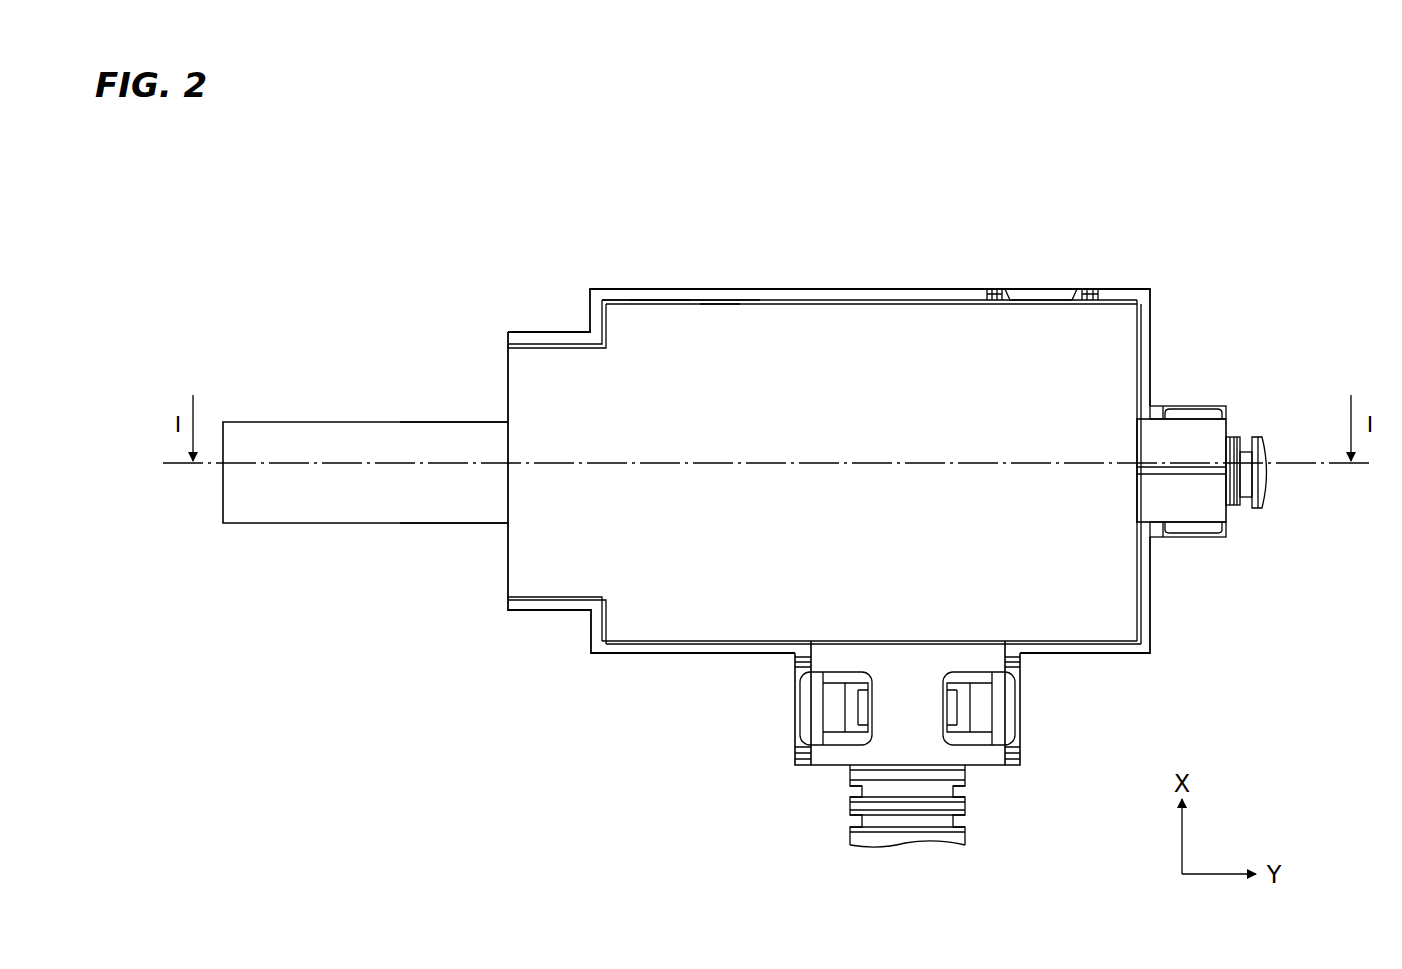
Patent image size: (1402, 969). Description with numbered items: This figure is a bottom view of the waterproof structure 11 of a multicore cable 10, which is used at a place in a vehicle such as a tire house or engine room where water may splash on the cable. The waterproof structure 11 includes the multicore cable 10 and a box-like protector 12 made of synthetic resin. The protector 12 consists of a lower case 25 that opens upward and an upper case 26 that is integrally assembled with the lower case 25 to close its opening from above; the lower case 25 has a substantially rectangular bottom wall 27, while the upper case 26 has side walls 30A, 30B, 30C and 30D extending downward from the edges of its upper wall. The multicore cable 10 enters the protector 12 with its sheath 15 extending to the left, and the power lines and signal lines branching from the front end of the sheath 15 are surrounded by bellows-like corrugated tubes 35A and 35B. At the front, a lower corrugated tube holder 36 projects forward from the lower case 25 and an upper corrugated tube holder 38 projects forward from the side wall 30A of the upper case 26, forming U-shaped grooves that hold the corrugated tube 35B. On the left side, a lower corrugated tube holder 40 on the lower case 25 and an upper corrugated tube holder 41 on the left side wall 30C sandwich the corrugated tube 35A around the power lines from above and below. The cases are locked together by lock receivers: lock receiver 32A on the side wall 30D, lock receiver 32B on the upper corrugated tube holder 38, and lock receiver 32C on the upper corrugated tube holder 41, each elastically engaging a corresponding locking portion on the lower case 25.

The multicore cable 10 is at (346, 436).
The waterproof structure 11 is at (821, 254).
The protector 12 is at (755, 200).
The sheath 15 is at (418, 440).
The lower case 25 is at (713, 345).
The upper case 26 is at (657, 300).
The bottom wall 27 is at (557, 578).
The side wall 30A is at (1148, 560).
The side wall 30B is at (597, 318).
The left side wall 30C is at (668, 650).
The side wall 30D is at (915, 291).
The lock receiver 32A is at (1040, 300).
The lock receiver 32B is at (1195, 410).
The lock receiver 32C is at (795, 708).
The corrugated tube 35A is at (950, 838).
The corrugated tube 35B is at (1262, 440).
The lower corrugated tube holder 36 is at (1166, 440).
The upper corrugated tube holder 38 is at (1225, 540).
The lower corrugated tube holder 40 is at (880, 735).
The upper corrugated tube holder 41 is at (1018, 677).